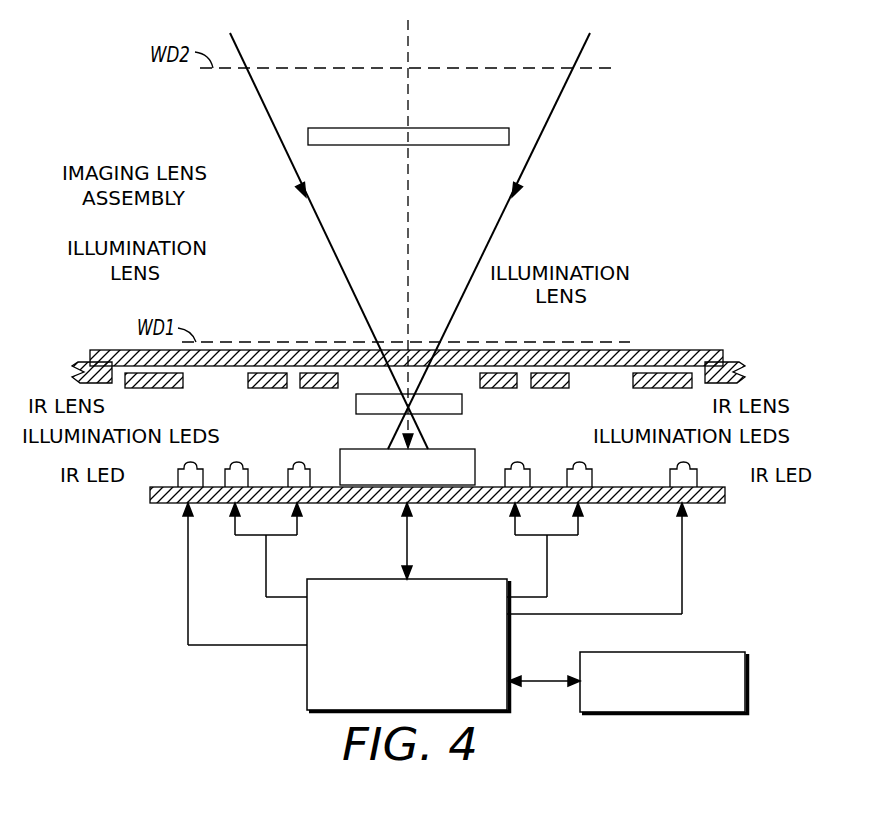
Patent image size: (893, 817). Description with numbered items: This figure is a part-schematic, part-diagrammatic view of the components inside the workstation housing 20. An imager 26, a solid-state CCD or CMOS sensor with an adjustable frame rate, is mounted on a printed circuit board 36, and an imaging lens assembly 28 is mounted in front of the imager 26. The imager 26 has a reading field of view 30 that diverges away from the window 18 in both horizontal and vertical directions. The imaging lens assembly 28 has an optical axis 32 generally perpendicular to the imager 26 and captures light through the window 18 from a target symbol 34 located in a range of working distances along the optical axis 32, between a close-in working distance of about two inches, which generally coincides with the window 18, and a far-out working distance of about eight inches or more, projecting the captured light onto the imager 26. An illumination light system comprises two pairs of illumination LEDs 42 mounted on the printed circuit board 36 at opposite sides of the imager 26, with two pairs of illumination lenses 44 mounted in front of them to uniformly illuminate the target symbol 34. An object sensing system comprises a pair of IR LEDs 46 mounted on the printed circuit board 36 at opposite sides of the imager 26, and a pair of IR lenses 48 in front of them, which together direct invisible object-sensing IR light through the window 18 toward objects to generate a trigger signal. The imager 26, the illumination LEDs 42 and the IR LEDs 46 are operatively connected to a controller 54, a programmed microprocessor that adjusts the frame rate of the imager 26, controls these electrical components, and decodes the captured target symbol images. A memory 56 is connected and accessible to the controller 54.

The window 18 is at (107, 349).
The housing 20 is at (747, 366).
The imager 26 is at (370, 449).
The imaging lens assembly 28 is at (363, 393).
The reading field of view 30 is at (556, 107).
The optical axis 32 is at (409, 36).
The target symbol 34 is at (473, 128).
The printed circuit board 36 is at (726, 498).
The illumination light emitting diodes 42 is at (299, 462).
The illumination lenses 44 is at (317, 373).
The infrared light emitting diodes 46 is at (177, 472).
The IR lenses 48 is at (157, 389).
The controller 54 is at (306, 624).
The memory 56 is at (747, 681).